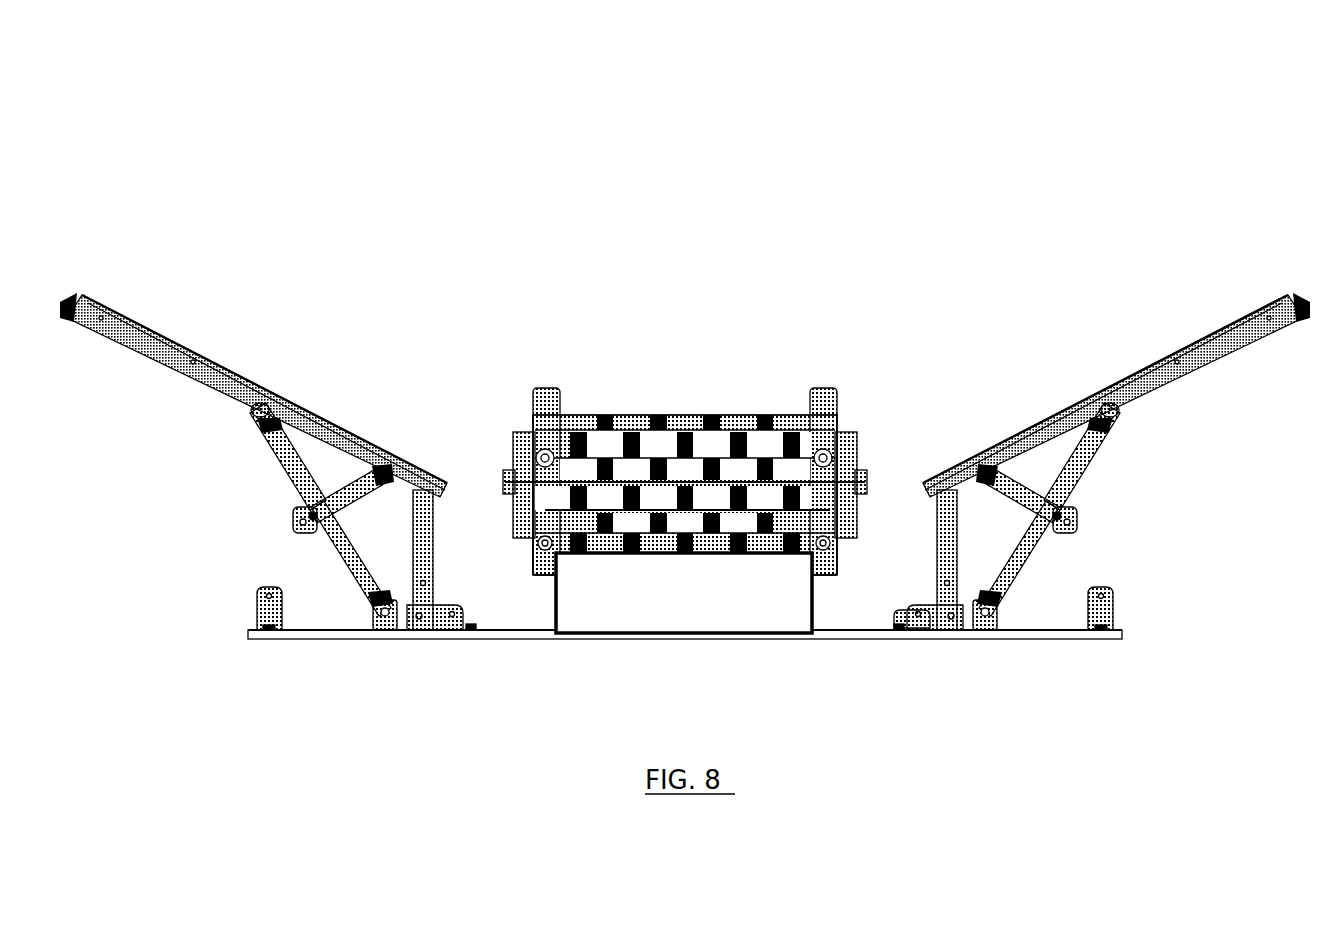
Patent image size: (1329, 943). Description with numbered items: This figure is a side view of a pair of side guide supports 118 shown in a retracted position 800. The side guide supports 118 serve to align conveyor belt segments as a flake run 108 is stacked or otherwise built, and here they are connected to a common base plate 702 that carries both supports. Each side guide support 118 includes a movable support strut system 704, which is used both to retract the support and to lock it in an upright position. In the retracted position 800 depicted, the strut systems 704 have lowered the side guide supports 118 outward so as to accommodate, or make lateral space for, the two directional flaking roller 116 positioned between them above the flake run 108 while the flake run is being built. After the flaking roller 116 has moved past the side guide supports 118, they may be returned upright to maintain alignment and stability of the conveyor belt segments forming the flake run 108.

The retracted position 800 is at (333, 148).
The side guide supports 118 is at (168, 335).
The two directional flaking roller 116 is at (680, 412).
The flake run 108 is at (708, 608).
The common base plate 702 is at (513, 638).
The movable support strut system 704 is at (302, 505).